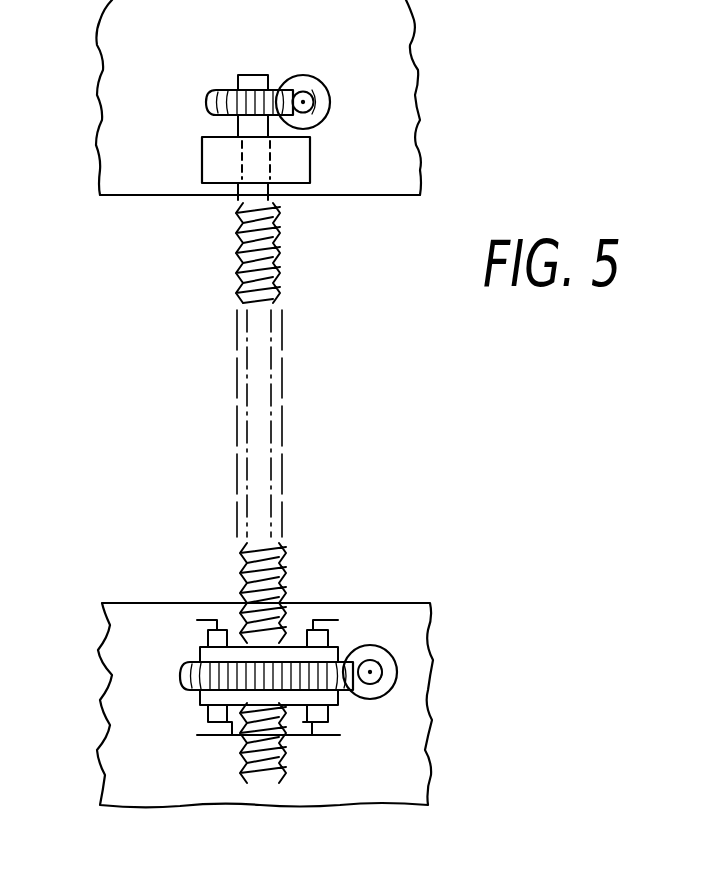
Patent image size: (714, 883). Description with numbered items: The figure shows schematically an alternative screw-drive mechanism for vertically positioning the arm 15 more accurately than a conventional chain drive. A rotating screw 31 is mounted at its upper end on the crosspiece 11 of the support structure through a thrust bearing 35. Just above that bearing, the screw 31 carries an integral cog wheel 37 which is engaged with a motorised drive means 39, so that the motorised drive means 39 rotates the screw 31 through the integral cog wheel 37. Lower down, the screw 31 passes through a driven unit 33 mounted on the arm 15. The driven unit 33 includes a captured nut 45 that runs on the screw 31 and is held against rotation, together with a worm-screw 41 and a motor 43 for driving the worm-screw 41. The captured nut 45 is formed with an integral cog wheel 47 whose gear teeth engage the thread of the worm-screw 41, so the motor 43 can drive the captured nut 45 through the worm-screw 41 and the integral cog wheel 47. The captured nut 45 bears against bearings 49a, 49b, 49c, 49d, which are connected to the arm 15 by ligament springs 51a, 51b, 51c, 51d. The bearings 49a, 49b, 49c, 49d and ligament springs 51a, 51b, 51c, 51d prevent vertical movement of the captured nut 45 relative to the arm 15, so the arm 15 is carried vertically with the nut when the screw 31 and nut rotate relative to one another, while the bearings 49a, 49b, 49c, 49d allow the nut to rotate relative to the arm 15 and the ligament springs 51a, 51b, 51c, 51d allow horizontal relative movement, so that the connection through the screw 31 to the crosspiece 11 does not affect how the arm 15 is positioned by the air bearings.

The crosspiece 11 is at (390, 47).
The arm 15 is at (413, 668).
The screw 31 is at (272, 280).
The driven unit 33 is at (140, 676).
The thrust bearing 35 is at (215, 165).
The integral cog wheel 37 is at (210, 100).
The motorised drive means 39 is at (333, 100).
The worm-screw 41 is at (374, 678).
The motor 43 is at (388, 656).
The captured nut 45 is at (200, 697).
The integral cog wheel 47 is at (182, 662).
The bearing 49a is at (230, 640).
The bearing 49b is at (290, 620).
The bearing 49c is at (230, 722).
The bearing 49d is at (303, 722).
The ligament spring 51a is at (213, 624).
The ligament spring 51b is at (330, 628).
The ligament spring 51c is at (218, 722).
The ligament spring 51d is at (330, 726).